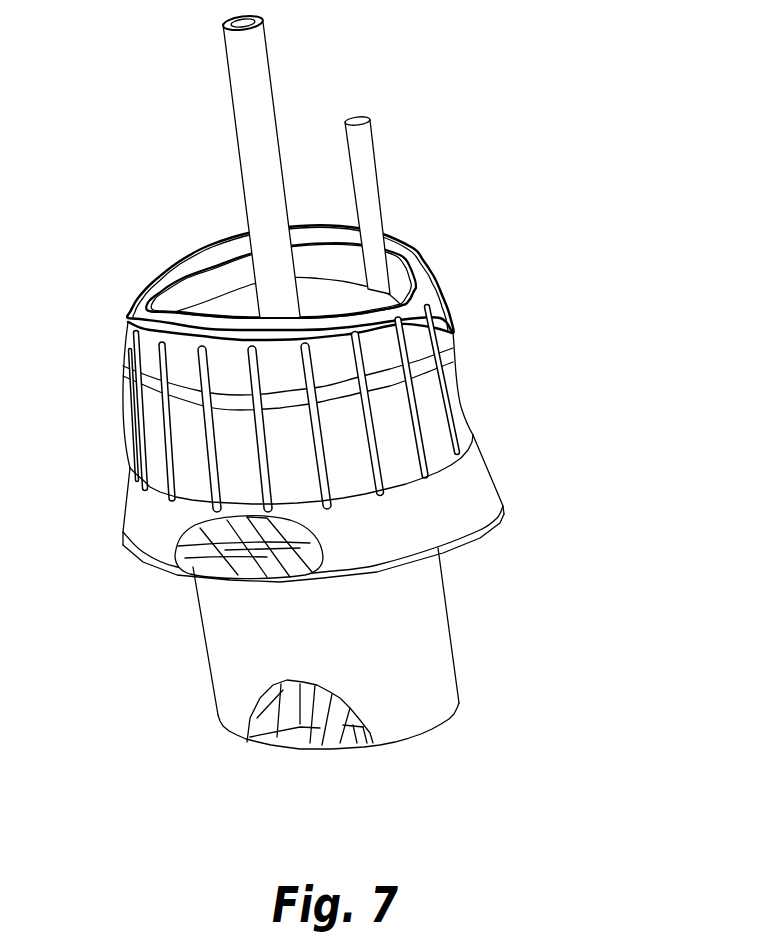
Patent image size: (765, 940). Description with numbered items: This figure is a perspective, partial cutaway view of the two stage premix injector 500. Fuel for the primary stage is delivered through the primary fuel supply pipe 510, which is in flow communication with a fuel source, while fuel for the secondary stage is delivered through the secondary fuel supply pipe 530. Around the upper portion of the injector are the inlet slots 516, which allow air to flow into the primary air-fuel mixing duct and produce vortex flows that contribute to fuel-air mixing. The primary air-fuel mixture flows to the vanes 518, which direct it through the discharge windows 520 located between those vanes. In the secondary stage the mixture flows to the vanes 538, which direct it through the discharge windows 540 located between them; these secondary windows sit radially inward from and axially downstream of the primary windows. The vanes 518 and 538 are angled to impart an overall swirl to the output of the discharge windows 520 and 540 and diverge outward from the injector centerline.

The premix injector 500 is at (353, 425).
The primary fuel supply pipe 510 is at (367, 155).
The secondary fuel supply pipe 530 is at (257, 70).
The inlet slots 516 is at (376, 425).
The vanes 518 is at (197, 553).
The discharge windows 520 is at (308, 577).
The vanes 538 is at (268, 725).
The discharge windows 540 is at (297, 741).